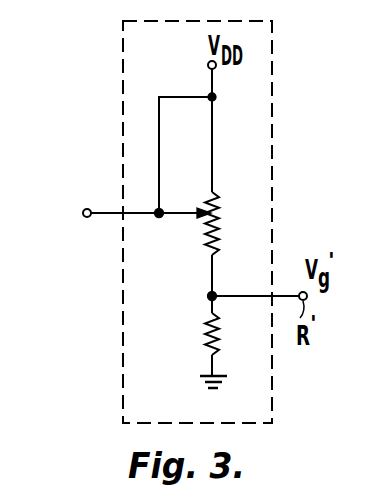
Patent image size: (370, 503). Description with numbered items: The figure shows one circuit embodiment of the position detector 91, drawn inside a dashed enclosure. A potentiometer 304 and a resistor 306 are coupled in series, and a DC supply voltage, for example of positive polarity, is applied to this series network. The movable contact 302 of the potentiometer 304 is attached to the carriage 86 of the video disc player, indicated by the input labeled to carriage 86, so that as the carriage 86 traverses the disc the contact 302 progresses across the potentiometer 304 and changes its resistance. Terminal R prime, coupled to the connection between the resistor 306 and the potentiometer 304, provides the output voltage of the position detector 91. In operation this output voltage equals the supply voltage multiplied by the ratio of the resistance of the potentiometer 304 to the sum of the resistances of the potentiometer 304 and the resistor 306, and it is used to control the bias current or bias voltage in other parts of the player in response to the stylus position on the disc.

The position detector 91 is at (272, 72).
The carriage 86 is at (98, 234).
The movable contact 302 is at (182, 221).
The potentiometer 304 is at (220, 203).
The resistor 306 is at (243, 331).